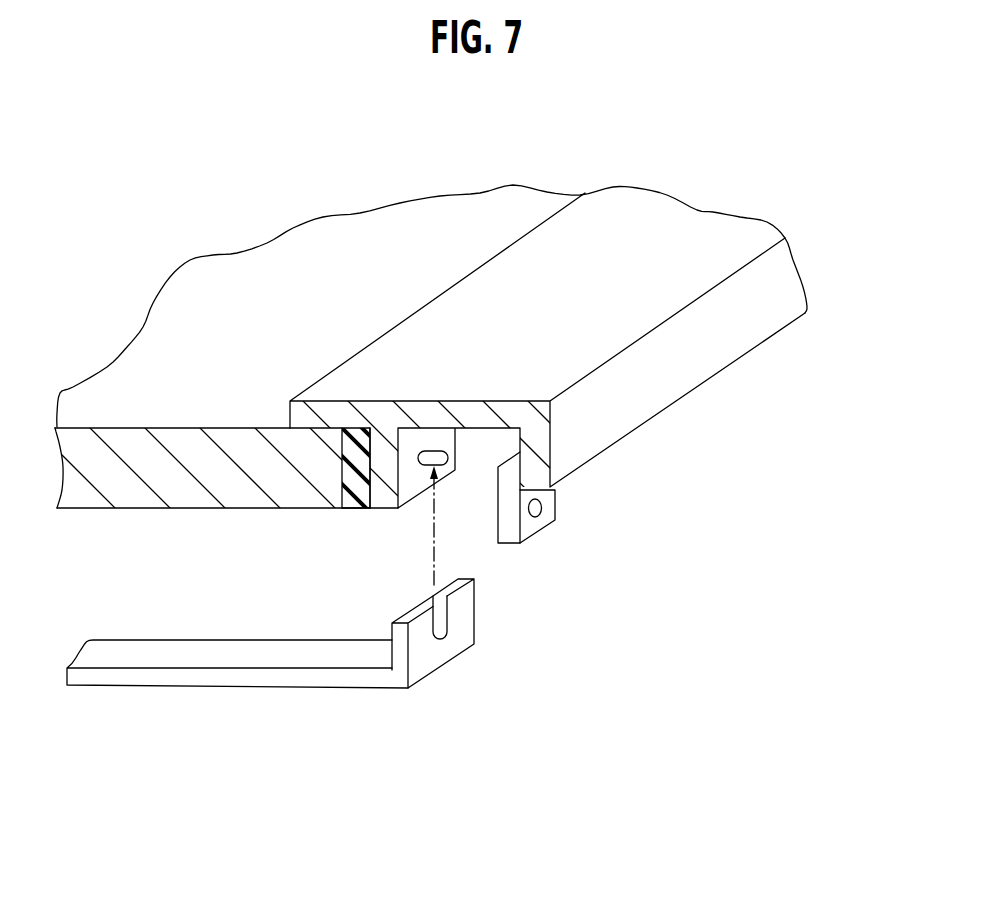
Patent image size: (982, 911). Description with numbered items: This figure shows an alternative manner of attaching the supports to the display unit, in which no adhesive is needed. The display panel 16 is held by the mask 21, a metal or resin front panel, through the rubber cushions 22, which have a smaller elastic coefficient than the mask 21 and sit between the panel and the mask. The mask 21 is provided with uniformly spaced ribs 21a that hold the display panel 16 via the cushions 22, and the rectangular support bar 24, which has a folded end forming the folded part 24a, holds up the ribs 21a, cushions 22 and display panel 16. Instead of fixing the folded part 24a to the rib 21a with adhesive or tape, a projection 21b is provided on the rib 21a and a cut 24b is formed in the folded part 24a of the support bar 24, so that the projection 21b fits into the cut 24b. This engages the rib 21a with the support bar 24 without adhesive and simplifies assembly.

The display panel 16 is at (197, 508).
The mask 21 is at (780, 288).
The rib 21a is at (437, 470).
The projection 21b is at (436, 450).
The rubber cushion 22 is at (353, 508).
The support bar 24 is at (335, 690).
The folded part 24a is at (474, 618).
The cut 24b is at (440, 634).